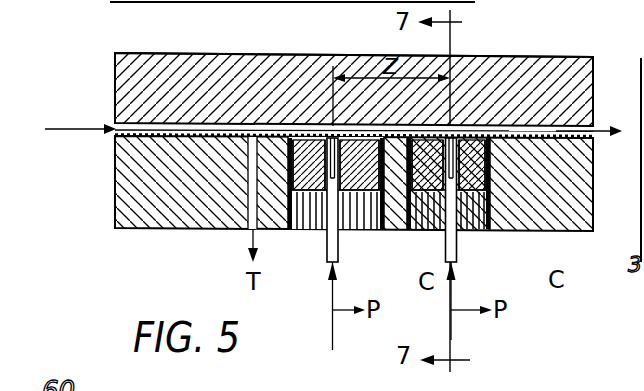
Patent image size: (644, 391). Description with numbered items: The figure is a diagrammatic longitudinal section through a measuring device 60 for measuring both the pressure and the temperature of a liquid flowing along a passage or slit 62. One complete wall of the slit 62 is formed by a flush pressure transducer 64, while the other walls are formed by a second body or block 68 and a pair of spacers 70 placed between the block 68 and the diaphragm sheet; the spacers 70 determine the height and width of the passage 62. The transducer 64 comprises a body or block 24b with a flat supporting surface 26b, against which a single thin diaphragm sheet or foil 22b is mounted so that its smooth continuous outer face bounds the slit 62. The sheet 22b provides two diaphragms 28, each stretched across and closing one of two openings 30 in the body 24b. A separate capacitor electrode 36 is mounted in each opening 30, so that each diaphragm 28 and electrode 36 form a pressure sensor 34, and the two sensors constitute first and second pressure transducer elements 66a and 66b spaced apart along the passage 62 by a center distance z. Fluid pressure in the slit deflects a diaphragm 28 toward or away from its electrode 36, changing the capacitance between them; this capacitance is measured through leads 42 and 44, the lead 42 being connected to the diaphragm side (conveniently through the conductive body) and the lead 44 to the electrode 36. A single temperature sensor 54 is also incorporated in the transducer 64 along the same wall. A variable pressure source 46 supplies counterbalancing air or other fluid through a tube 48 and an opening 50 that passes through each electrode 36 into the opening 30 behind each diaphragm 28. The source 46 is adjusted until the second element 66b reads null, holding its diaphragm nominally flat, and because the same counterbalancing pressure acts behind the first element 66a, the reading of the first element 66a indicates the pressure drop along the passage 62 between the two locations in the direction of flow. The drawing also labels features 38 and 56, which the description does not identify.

The measuring device 60 is at (98, 58).
The passage or slit 62 is at (150, 128).
The flush pressure transducer 64 is at (100, 173).
The temperature sensor 54 is at (236, 141).
The diaphragm 28 is at (248, 141).
The opening 30 is at (372, 128).
The opening 50 is at (324, 131).
The diaphragm sheet or foil 22b is at (386, 124).
The second body or block 68 is at (597, 62).
The flat supporting surface 26b is at (621, 99).
The spacers 70 is at (636, 130).
The body or block 24b is at (560, 184).
The slot 56 is at (246, 233).
The pressure sensors 34 is at (290, 231).
The capacitor electrode 36 is at (318, 229).
The contact springs 38 is at (404, 258).
The lead 42 is at (362, 229).
The lead 44 is at (391, 292).
The variable pressure source 46 is at (331, 341).
The tube 48 is at (335, 266).
The first pressure transducer element 66a is at (299, 270).
The second pressure transducer element 66b is at (428, 296).